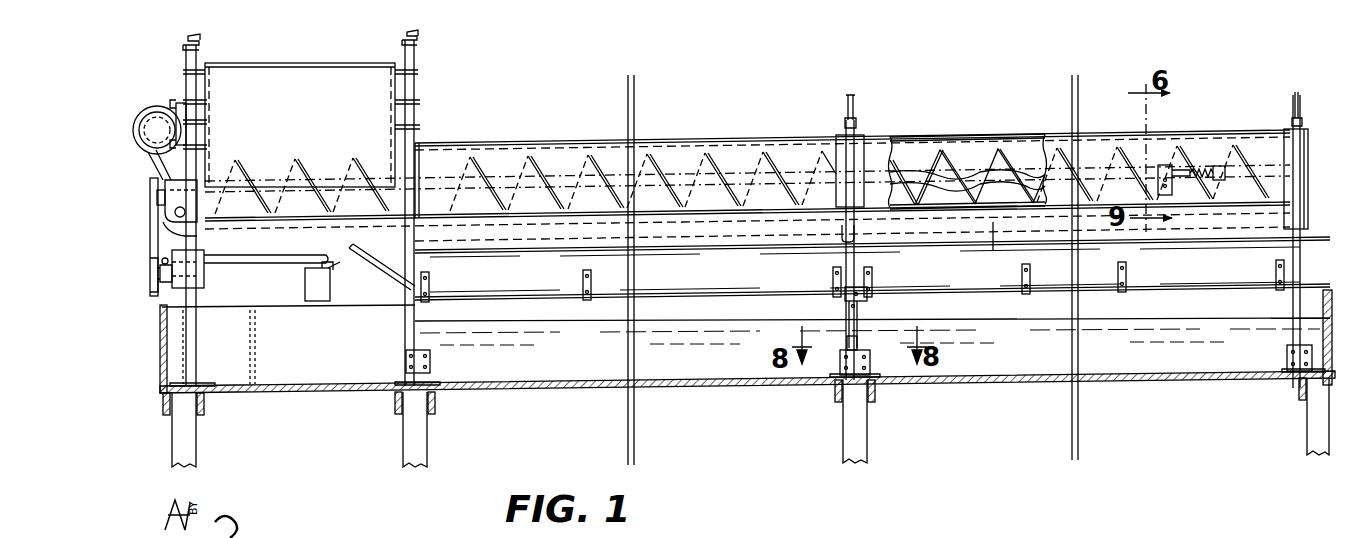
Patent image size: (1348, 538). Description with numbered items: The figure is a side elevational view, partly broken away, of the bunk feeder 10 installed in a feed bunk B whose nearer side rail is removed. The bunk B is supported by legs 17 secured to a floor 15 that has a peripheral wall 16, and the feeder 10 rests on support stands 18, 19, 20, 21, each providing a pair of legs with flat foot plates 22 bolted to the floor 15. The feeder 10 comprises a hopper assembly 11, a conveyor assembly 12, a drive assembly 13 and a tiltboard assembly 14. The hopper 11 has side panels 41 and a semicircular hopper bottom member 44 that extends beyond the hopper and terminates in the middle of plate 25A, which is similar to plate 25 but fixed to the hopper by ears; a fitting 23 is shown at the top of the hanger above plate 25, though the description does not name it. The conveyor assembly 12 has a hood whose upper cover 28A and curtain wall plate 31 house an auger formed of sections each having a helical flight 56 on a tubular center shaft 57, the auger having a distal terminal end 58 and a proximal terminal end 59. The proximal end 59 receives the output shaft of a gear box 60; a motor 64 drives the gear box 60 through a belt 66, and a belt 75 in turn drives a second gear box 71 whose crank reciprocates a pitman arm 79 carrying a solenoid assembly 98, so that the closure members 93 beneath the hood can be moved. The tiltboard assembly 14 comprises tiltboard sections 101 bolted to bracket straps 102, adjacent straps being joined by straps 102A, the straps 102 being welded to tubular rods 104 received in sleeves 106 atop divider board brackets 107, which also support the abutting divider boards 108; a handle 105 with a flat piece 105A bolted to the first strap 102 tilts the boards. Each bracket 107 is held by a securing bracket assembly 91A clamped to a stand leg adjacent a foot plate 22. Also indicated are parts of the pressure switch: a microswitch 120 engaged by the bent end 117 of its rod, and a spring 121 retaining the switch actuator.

The bunk feeder 10 is at (735, 112).
The hopper assembly 11 is at (350, 60).
The conveyor assembly 12 is at (579, 140).
The drive assembly 13 is at (148, 273).
The tiltboard assembly 14 is at (1280, 248).
The floor 15 is at (1142, 380).
The peripheral wall 16 is at (160, 347).
The legs 17 is at (185, 434).
The support stand 18 is at (200, 304).
The support stand 19 is at (416, 337).
The support stand 20 is at (840, 242).
The support stand 21 is at (1312, 217).
The foot plates 22 is at (214, 383).
The hanger rod fitting 23 is at (846, 114).
The plate 25 is at (864, 133).
The plate 25A is at (420, 144).
The upper cover 28A is at (503, 150).
The curtain wall plate 31 is at (656, 242).
The side panels 41 is at (312, 100).
The hopper bottom member 44 is at (303, 222).
The helical flight 56 is at (962, 186).
The tubular center shaft 57 is at (918, 178).
The distal terminal end 58 is at (1310, 155).
The proximal terminal end 59 is at (222, 175).
The gear box 60 is at (172, 199).
The motor 64 is at (149, 110).
The belt 66 is at (150, 165).
The second gear box 71 is at (186, 280).
The belt 75 is at (150, 240).
The pitman arm 79 is at (262, 263).
The securing bracket assembly 91A is at (431, 365).
The closure member 93 is at (995, 250).
The solenoid assembly 98 is at (303, 290).
The tiltboard sections 101 is at (536, 279).
The bracket strap 102 is at (592, 283).
The straps 102A is at (874, 270).
The tubular rod 104 is at (740, 298).
The handle 105 is at (385, 268).
The flat piece 105A is at (430, 283).
The sleeves 106 is at (861, 304).
The divider board bracket 107 is at (848, 313).
The divider boards 108 is at (554, 356).
The bent end 117 is at (1188, 170).
The microswitch 120 is at (1164, 165).
The spring 121 is at (1210, 168).
The bunk B is at (1222, 383).